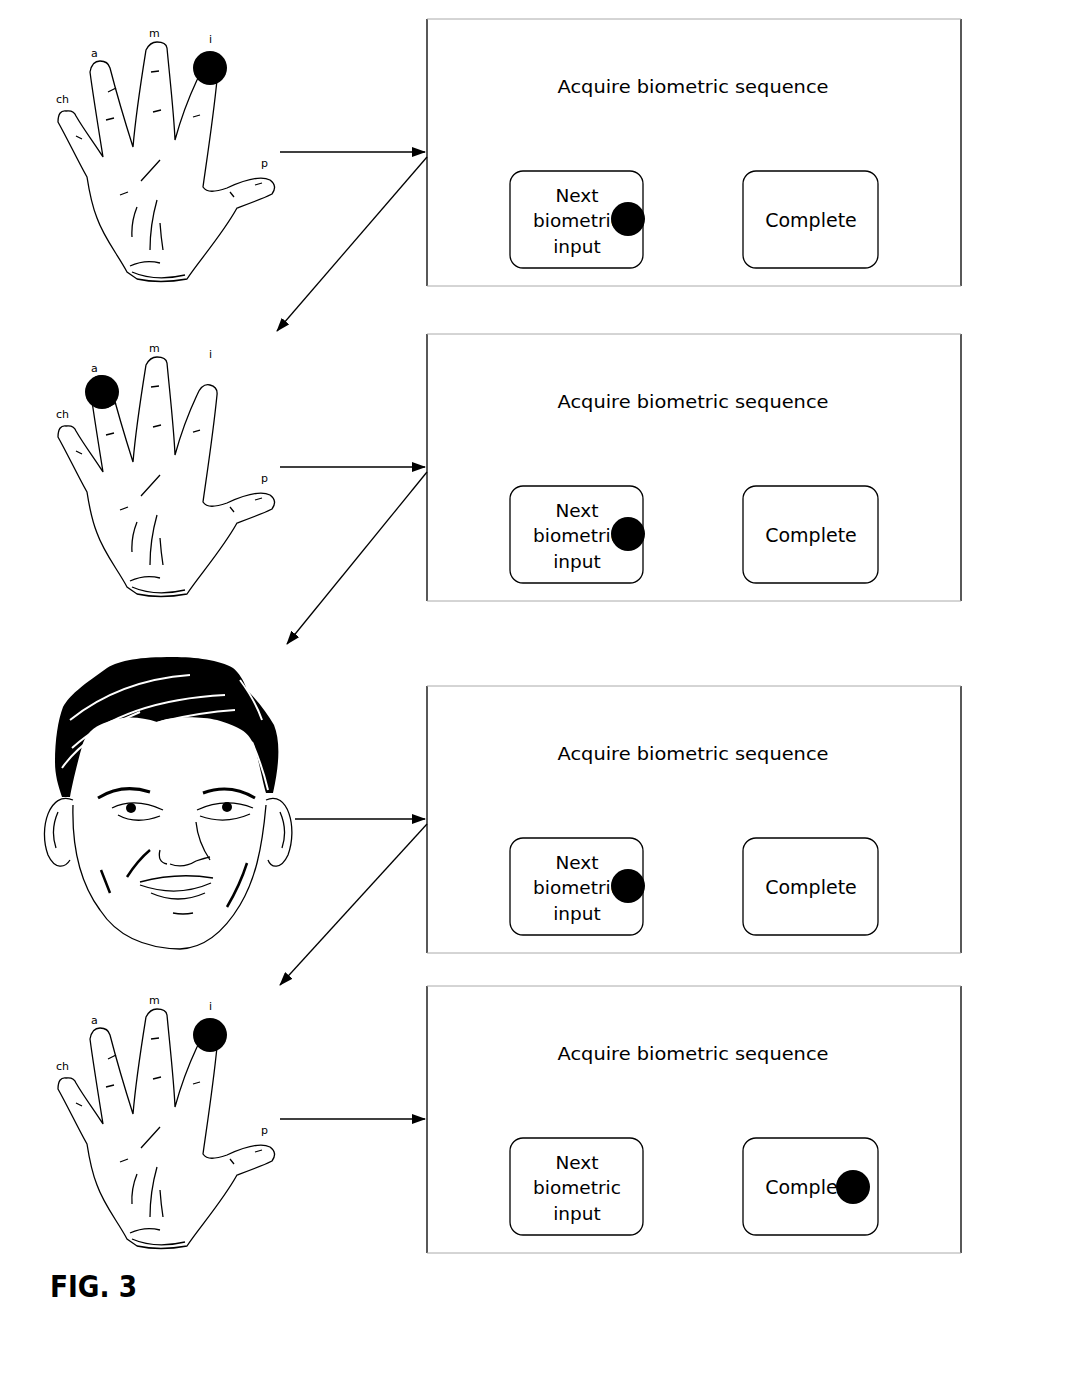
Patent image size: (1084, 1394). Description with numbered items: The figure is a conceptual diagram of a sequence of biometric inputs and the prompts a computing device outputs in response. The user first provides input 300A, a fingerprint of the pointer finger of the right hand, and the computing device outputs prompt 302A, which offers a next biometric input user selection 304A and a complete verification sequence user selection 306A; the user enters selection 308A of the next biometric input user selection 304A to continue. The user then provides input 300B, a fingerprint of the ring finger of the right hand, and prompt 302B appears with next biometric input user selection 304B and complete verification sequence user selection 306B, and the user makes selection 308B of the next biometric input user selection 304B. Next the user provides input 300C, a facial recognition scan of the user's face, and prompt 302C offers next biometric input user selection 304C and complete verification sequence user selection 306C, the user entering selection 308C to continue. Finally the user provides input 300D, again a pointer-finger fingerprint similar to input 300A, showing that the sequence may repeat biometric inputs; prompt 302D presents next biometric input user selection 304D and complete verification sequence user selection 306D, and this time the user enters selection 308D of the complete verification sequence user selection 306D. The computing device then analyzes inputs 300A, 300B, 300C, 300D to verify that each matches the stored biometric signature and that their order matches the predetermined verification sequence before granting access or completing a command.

The input 300A is at (226, 59).
The input 300B is at (111, 377).
The input 300C is at (258, 697).
The input 300D is at (226, 1026).
The prompt 302A is at (427, 68).
The prompt 302B is at (427, 383).
The prompt 302C is at (427, 735).
The prompt 302D is at (427, 1035).
The next biometric input user selection 304A is at (580, 171).
The next biometric input user selection 304B is at (580, 486).
The next biometric input user selection 304C is at (580, 838).
The next biometric input user selection 304D is at (580, 1138).
The complete verification sequence user selection 306A is at (813, 171).
The complete verification sequence user selection 306B is at (813, 486).
The complete verification sequence user selection 306C is at (813, 838).
The complete verification sequence user selection 306D is at (813, 1138).
The selection 308A is at (644, 210).
The selection 308B is at (644, 525).
The selection 308C is at (644, 877).
The selection 308D is at (868, 1177).